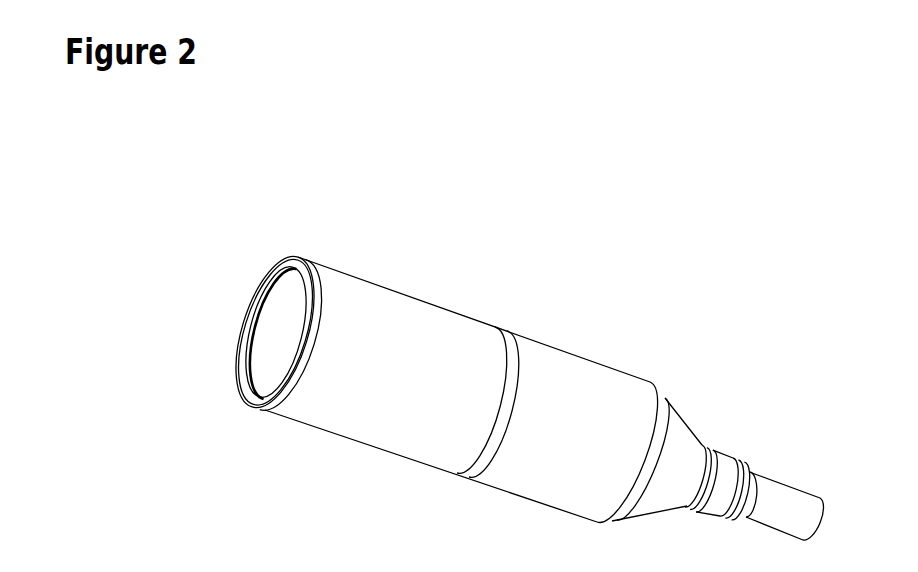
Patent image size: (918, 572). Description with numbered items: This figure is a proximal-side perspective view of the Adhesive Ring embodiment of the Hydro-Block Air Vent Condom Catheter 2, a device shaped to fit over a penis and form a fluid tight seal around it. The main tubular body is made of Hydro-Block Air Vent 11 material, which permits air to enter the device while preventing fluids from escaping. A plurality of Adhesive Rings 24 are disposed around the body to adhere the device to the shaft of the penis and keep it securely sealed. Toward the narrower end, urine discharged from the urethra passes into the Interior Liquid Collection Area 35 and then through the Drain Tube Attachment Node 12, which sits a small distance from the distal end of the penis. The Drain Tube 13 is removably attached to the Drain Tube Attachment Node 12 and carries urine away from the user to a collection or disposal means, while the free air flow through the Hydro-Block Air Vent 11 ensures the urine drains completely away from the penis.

The Adhesive Ring embodiment of the Hydro-Block Air Vent Condom Catheter 2 is at (430, 302).
The Hydro-Block Air Vent 11 is at (430, 363).
The Adhesive Rings 24 is at (458, 470).
The Interior Liquid Collection Area 35 is at (683, 448).
The Drain Tube Attachment Node 12 is at (723, 460).
The Drain Tube 13 is at (790, 497).